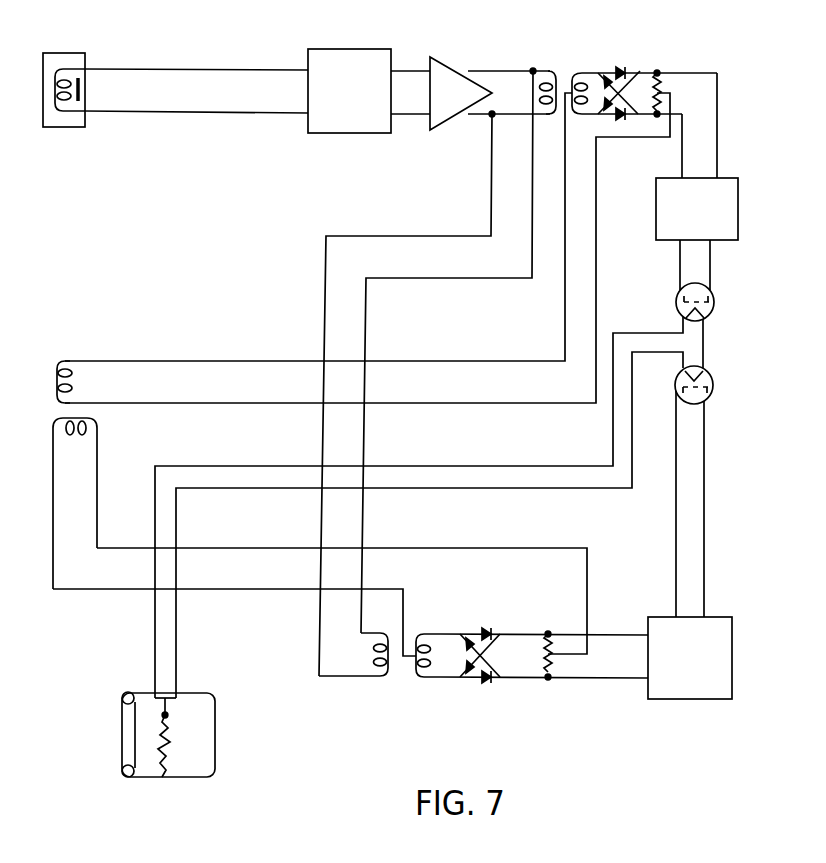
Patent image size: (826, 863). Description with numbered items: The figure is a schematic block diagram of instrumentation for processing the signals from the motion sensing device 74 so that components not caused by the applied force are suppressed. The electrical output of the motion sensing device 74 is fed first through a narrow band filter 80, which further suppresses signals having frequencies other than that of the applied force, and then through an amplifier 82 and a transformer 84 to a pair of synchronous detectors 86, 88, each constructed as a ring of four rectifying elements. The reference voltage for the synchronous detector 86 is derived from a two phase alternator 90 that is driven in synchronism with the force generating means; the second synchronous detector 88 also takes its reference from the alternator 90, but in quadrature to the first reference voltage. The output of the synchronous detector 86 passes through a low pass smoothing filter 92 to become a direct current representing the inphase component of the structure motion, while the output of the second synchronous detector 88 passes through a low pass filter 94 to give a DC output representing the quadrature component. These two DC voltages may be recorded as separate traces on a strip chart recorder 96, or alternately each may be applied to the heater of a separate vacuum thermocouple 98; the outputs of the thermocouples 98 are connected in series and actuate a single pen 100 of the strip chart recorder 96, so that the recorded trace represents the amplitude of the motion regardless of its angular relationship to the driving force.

The motion sensing device 74 is at (43, 70).
The narrow band filter 80 is at (351, 49).
The amplifier 82 is at (455, 68).
The transformer 84 is at (562, 79).
The synchronous detector 86 is at (636, 68).
The second synchronous detector 88 is at (494, 685).
The two phase alternator 90 is at (57, 410).
The low pass smoothing filter 92 is at (738, 181).
The low pass filter 94 is at (717, 699).
The strip chart recorder 96 is at (195, 693).
The vacuum thermocouples 98 is at (714, 300).
The pen 100 is at (162, 715).